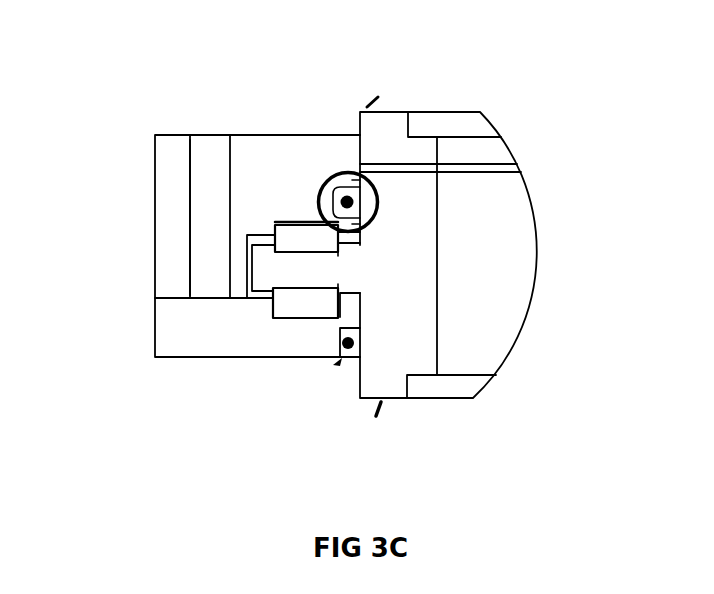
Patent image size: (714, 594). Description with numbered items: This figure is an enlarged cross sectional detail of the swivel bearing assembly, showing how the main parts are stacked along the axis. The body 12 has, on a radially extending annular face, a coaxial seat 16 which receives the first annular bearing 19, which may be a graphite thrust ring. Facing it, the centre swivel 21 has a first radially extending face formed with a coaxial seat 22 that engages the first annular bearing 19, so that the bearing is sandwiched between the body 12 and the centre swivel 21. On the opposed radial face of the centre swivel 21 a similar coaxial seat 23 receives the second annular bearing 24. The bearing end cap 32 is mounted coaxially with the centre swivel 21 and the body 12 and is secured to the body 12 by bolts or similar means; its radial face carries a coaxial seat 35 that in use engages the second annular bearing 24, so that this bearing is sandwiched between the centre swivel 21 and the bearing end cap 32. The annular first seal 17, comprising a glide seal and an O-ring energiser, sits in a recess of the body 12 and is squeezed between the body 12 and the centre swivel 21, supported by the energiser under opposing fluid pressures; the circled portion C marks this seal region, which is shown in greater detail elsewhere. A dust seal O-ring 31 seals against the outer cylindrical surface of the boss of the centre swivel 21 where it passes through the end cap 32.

The body 12 is at (448, 216).
The coaxial seat 16 is at (277, 220).
The first seal 17 is at (257, 184).
The first annular bearing 19 is at (315, 233).
The centre swivel 21 is at (411, 446).
The coaxial seat 22 is at (329, 259).
The coaxial seat 23 is at (330, 282).
The second annular bearing 24 is at (131, 217).
The dust seal O-ring 31 is at (301, 389).
The bearing end cap 32 is at (225, 351).
The coaxial seat 35 is at (295, 328).
The portion C is at (340, 168).